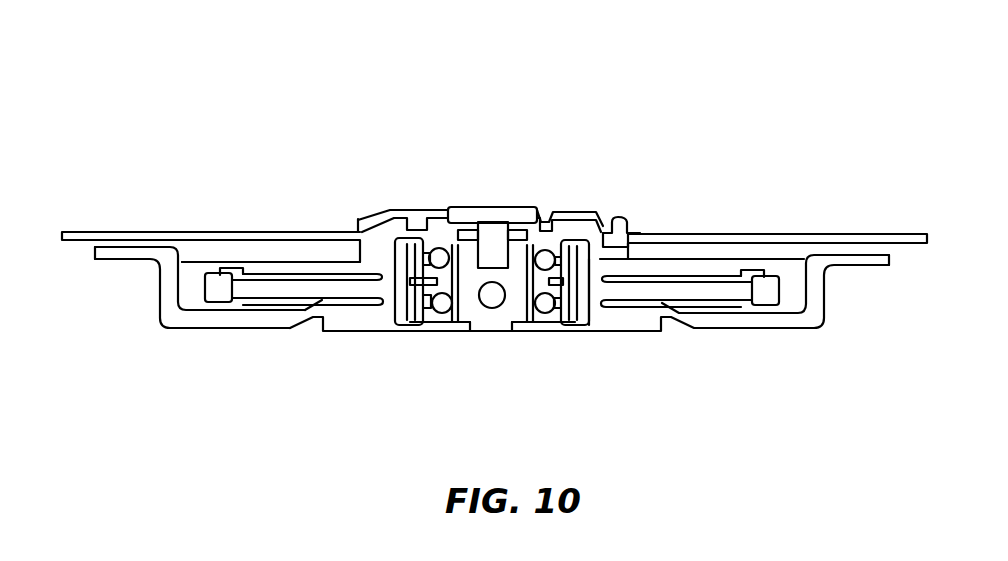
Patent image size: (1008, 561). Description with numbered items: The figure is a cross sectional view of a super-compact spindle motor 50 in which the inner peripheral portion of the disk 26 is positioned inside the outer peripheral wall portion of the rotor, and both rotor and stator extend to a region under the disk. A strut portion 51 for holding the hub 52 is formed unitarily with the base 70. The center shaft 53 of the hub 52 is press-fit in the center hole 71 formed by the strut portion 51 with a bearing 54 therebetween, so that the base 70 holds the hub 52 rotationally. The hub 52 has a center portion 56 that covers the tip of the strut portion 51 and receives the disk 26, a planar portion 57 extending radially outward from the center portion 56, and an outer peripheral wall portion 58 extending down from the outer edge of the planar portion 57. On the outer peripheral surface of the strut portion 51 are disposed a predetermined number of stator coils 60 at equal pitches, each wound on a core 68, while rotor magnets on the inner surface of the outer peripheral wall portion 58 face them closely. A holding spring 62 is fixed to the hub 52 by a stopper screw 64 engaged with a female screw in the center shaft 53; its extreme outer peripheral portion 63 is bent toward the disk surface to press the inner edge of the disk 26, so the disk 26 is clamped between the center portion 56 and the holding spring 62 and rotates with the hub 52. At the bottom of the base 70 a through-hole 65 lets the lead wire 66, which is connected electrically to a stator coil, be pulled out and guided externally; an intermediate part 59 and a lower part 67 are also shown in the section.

The spindle motor assembly 50 is at (570, 72).
The disk 26 is at (837, 233).
The extreme outer peripheral portion 63 is at (365, 222).
The stopper screw 64 is at (498, 207).
The holding spring 62 is at (578, 210).
The center portion 56 is at (607, 213).
The hub 52 is at (632, 240).
The spacer 59 is at (737, 247).
The outer peripheral wall portion 58 is at (193, 270).
The planar portion 57 is at (238, 270).
The lead wire 66 is at (220, 330).
The through-hole 65 is at (303, 330).
The bearing 54 is at (445, 285).
The center shaft 53 is at (467, 310).
The thrust plate 67 is at (517, 333).
The center hole 71 is at (577, 292).
The strut portion 51 is at (587, 320).
The core 68 is at (700, 298).
The stator coils 60 is at (738, 300).
The base 70 is at (820, 317).